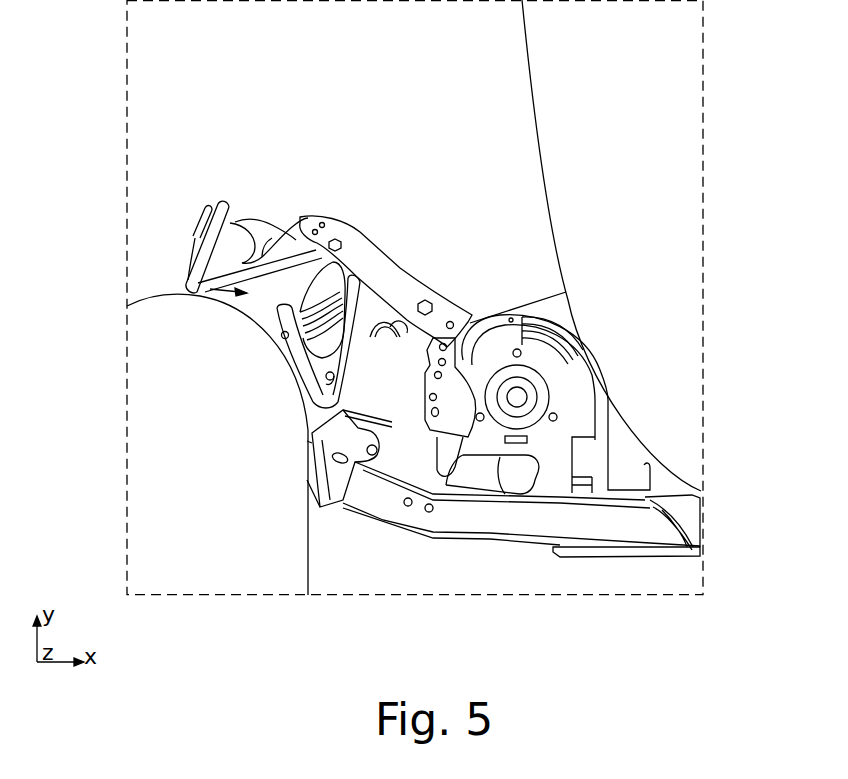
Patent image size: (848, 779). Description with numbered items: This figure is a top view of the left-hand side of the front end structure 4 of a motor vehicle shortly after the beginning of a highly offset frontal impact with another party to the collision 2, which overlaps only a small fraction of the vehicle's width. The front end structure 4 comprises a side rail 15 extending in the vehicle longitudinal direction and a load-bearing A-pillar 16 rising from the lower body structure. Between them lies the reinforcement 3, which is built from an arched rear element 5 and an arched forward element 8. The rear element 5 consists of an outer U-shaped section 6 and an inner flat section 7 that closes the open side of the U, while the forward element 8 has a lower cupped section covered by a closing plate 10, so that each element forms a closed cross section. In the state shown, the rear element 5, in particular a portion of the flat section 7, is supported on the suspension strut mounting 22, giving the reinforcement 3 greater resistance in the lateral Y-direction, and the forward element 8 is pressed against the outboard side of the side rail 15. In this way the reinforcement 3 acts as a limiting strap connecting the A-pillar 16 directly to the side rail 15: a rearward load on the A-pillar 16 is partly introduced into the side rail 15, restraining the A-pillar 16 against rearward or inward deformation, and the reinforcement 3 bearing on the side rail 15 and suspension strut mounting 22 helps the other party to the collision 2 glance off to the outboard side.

The other party to the collision 2 is at (227, 406).
The reinforcement 3 is at (397, 552).
The front end structure 4 is at (372, 171).
The arched rear element 5 is at (661, 565).
The outer U-shaped section 6 is at (570, 527).
The inner flat section 7 is at (474, 474).
The arched forward element 8 is at (188, 282).
The closing plate 10 is at (277, 287).
The side rail 15 is at (388, 278).
The A-pillar 16 is at (733, 478).
The suspension strut mounting 22 is at (560, 383).